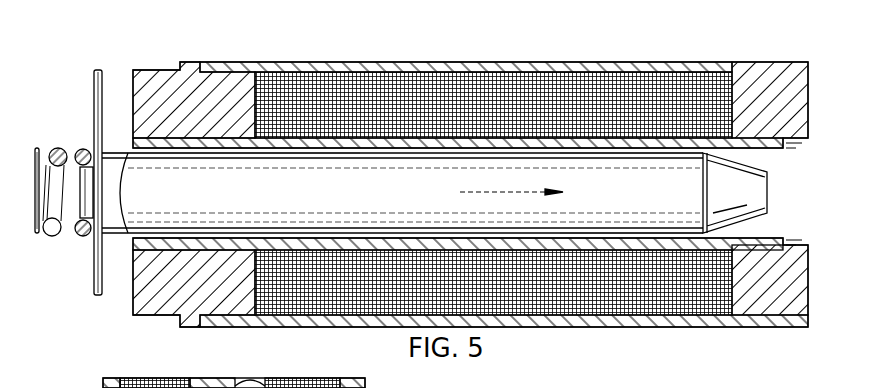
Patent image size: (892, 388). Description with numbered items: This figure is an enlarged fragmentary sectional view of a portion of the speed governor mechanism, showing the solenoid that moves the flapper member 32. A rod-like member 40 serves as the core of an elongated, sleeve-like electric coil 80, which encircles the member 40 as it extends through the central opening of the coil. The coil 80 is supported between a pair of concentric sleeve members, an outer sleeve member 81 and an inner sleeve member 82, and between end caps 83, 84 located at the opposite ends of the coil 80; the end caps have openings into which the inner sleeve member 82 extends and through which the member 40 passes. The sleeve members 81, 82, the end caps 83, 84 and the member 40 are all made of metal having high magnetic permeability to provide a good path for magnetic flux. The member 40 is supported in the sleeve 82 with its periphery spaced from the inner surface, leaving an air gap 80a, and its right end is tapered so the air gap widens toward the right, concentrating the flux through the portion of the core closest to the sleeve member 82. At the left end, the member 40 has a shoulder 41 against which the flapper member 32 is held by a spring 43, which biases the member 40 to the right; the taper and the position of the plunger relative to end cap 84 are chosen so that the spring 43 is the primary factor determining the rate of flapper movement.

The flapper member 32 is at (107, 77).
The end cap 83 is at (188, 85).
The outer sleeve member 81 is at (664, 63).
The end cap 84 is at (785, 85).
The shoulder 41 is at (76, 150).
The spring 43 is at (60, 234).
The electric coil 80 is at (450, 127).
The air gap 80a is at (347, 153).
The inner sleeve member 82 is at (612, 148).
The member (plunger) 40 is at (700, 181).